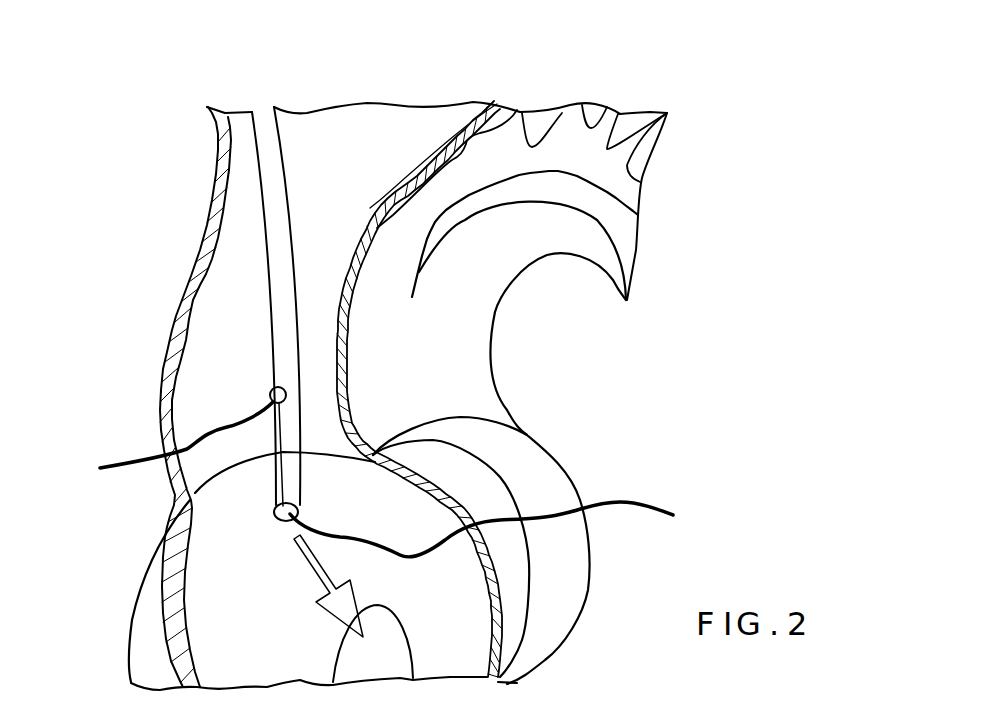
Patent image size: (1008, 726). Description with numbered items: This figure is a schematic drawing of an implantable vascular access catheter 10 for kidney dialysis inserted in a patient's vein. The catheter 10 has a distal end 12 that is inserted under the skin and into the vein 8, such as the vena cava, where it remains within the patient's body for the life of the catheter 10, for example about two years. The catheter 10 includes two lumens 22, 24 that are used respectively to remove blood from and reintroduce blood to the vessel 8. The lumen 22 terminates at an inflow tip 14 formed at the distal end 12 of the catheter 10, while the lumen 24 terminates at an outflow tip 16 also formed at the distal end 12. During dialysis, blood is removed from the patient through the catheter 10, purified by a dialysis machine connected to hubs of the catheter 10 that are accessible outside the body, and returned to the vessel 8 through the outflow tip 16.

The vein 8 is at (178, 306).
The catheter 10 is at (267, 140).
The distal end 12 is at (115, 457).
The inflow tip 14 is at (657, 505).
The outflow tip 16 is at (277, 367).
The lumen 22 is at (270, 393).
The lumen 24 is at (273, 512).